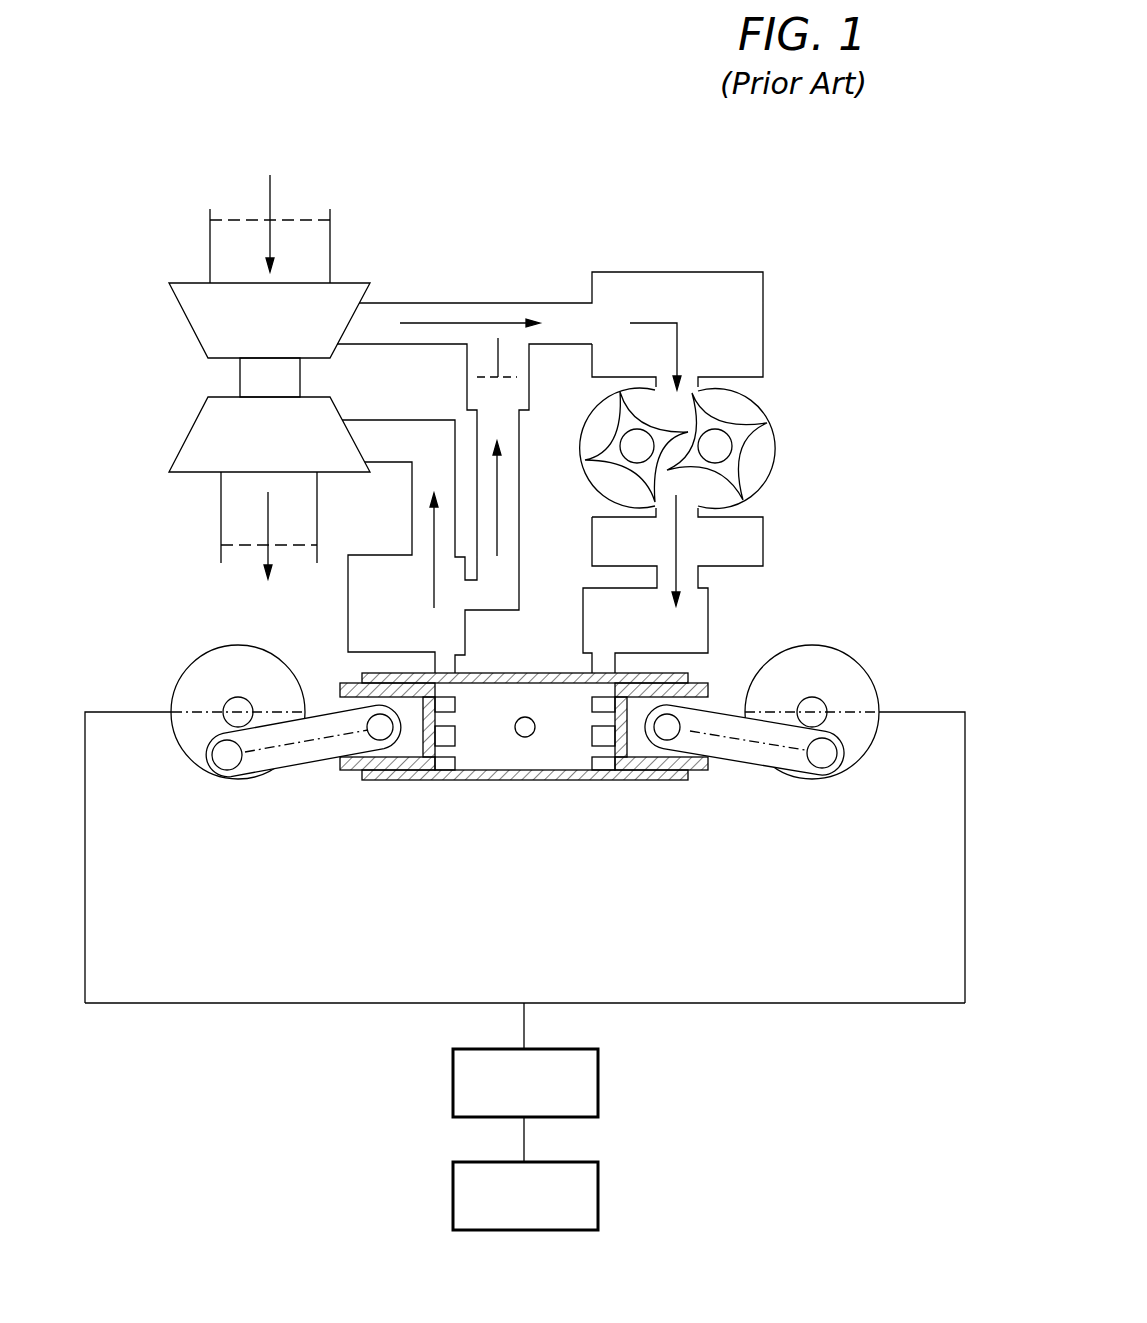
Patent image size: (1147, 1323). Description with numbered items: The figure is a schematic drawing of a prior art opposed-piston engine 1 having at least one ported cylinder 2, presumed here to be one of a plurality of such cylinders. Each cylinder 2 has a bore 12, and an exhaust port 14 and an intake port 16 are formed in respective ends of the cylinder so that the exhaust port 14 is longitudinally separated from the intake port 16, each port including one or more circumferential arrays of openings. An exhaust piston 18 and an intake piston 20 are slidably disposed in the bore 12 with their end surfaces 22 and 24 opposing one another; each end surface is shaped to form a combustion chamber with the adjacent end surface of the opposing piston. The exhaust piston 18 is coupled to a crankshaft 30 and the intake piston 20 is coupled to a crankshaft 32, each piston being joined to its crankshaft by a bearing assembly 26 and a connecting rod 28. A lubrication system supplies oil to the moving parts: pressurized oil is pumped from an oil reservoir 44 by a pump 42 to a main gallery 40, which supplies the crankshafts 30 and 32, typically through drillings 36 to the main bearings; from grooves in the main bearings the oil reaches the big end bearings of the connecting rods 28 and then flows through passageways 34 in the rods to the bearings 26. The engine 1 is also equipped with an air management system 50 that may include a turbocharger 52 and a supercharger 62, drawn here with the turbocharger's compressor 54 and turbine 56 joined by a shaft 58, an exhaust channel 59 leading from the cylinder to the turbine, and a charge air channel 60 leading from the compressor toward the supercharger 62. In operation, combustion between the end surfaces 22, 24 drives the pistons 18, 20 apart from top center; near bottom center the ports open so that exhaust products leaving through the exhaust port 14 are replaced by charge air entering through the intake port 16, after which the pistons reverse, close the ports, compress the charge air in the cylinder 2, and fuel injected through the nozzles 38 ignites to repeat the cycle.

The opposed-piston engine 1 is at (848, 551).
The ported cylinder 2 is at (490, 673).
The bore 12 is at (546, 758).
The exhaust port 14 is at (446, 795).
The intake port 16 is at (603, 790).
The exhaust piston 18 is at (342, 772).
The intake piston 20 is at (703, 680).
The end surface 22 is at (445, 710).
The end surface 24 is at (603, 712).
The bearing assembly 26 is at (360, 710).
The connecting rod 28 is at (288, 767).
The crankshaft 30 is at (237, 780).
The crankshaft 32 is at (812, 778).
The passageways 34 is at (314, 740).
The drillings 36 is at (202, 712).
The nozzles 38 is at (528, 718).
The main gallery 40 is at (262, 1004).
The pump 42 is at (598, 1083).
The oil reservoir 44 is at (598, 1197).
The air management system 50 is at (497, 162).
The turbocharger 52 is at (186, 373).
The compressor 54 is at (185, 307).
The turbine 56 is at (193, 433).
The turbocharger shaft 58 is at (300, 378).
The exhaust channel 59 is at (410, 493).
The charge air channel 60 is at (456, 303).
The supercharger 62 is at (757, 398).